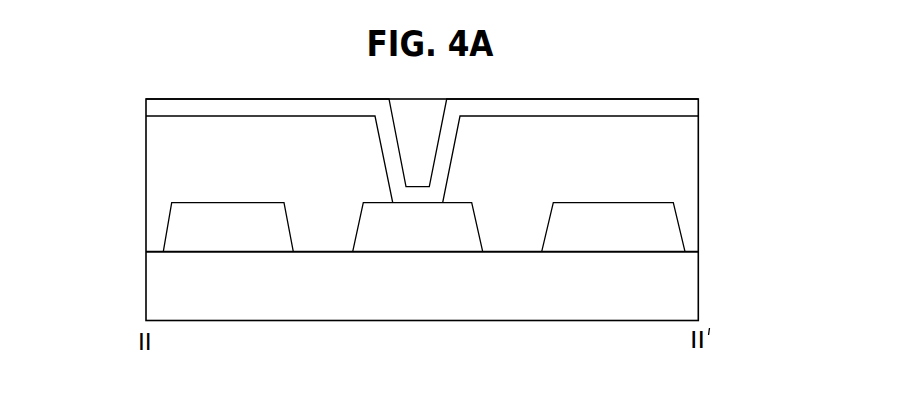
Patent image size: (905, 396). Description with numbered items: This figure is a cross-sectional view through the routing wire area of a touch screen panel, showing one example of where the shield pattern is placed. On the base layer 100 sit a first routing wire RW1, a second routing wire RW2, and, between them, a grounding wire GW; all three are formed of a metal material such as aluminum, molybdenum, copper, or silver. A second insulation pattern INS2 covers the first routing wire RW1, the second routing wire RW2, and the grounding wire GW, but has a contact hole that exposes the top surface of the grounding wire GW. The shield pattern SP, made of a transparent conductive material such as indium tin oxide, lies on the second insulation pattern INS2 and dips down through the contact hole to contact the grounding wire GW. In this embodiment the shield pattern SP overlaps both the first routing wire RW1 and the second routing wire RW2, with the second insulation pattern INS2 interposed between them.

The base layer 100 is at (688, 288).
The second insulation pattern INS2 is at (686, 147).
The shield pattern SP is at (686, 108).
The first routing wires RW1 is at (662, 228).
The second routing wires RW2 is at (182, 226).
The grounding wire GW is at (417, 233).